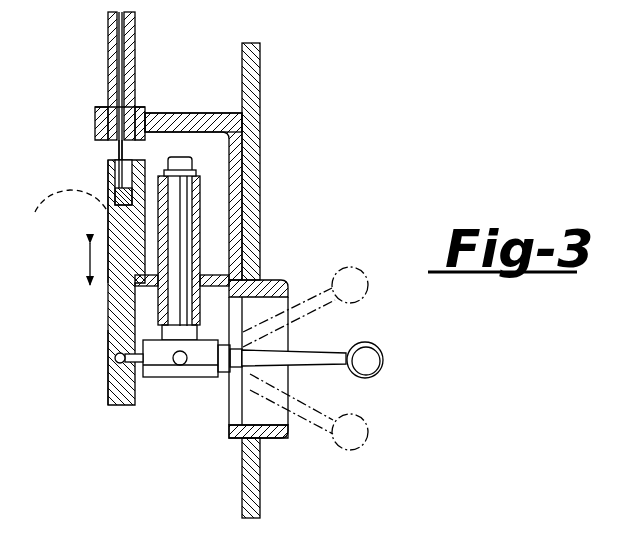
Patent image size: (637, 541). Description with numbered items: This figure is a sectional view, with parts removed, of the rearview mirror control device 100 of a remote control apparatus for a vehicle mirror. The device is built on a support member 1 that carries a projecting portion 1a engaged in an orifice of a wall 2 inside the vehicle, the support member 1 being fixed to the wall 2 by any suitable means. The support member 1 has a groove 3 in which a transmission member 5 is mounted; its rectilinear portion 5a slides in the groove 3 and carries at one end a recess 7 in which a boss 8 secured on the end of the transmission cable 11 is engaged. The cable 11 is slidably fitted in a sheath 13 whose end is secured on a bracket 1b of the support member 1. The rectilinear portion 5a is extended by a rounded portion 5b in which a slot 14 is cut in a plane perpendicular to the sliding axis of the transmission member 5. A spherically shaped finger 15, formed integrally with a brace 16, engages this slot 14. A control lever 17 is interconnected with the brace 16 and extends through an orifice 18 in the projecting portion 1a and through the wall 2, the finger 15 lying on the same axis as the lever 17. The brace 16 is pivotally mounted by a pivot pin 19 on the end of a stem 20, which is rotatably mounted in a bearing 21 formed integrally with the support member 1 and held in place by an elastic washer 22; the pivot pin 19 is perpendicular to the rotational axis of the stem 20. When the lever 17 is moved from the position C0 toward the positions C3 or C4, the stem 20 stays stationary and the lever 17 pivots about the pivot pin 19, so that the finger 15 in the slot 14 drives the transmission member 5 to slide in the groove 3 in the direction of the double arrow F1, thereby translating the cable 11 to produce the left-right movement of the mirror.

The support member 1 is at (241, 249).
The projecting portion 1a is at (266, 284).
The bracket 1b is at (188, 113).
The wall 2 is at (258, 78).
The groove 3 is at (36, 212).
The transmission member 5 is at (107, 298).
The rectilinear portion 5a is at (110, 228).
The rounded portion 5b is at (110, 397).
The recess 7 is at (108, 194).
The boss 8 is at (110, 188).
The transmission cable 11 is at (128, 72).
The sheath 13 is at (108, 43).
The slot 14 is at (110, 360).
The spherically shaped finger 15 is at (110, 355).
The brace 16 is at (160, 368).
The control lever 17 is at (335, 344).
The orifice 18 is at (230, 420).
The pivot pin 19 is at (187, 364).
The stem 20 is at (180, 223).
The bearing 21 is at (200, 197).
The elastic washer 22 is at (196, 171).
The rearview mirror control device 100 is at (322, 216).
The double arrow F1 is at (67, 261).
The lever position C0 is at (387, 360).
The lever position C3 is at (326, 307).
The lever position C4 is at (334, 416).